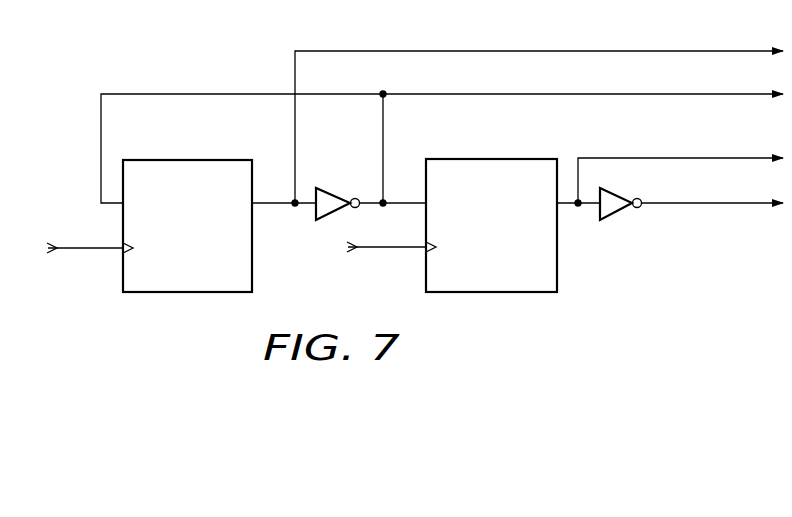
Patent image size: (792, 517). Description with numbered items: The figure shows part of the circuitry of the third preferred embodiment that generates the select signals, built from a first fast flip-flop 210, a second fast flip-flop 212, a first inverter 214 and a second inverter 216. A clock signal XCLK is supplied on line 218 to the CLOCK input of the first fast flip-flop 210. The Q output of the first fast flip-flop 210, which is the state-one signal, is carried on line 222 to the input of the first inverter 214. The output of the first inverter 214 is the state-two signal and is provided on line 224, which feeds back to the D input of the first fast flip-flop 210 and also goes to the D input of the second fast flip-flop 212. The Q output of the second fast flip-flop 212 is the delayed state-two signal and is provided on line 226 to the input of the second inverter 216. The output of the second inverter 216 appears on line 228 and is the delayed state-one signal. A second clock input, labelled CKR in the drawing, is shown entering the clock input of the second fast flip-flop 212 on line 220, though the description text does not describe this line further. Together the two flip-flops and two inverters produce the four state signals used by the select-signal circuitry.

The first fast flip-flop 210 is at (186, 293).
The second fast flip-flop 212 is at (492, 293).
The first inverter 214 is at (338, 188).
The second inverter 216 is at (617, 215).
The line 218 is at (88, 256).
The CKR clock input 220 is at (390, 255).
The line 222 is at (275, 206).
The line 224 is at (232, 94).
The line 226 is at (617, 158).
The line 228 is at (713, 206).